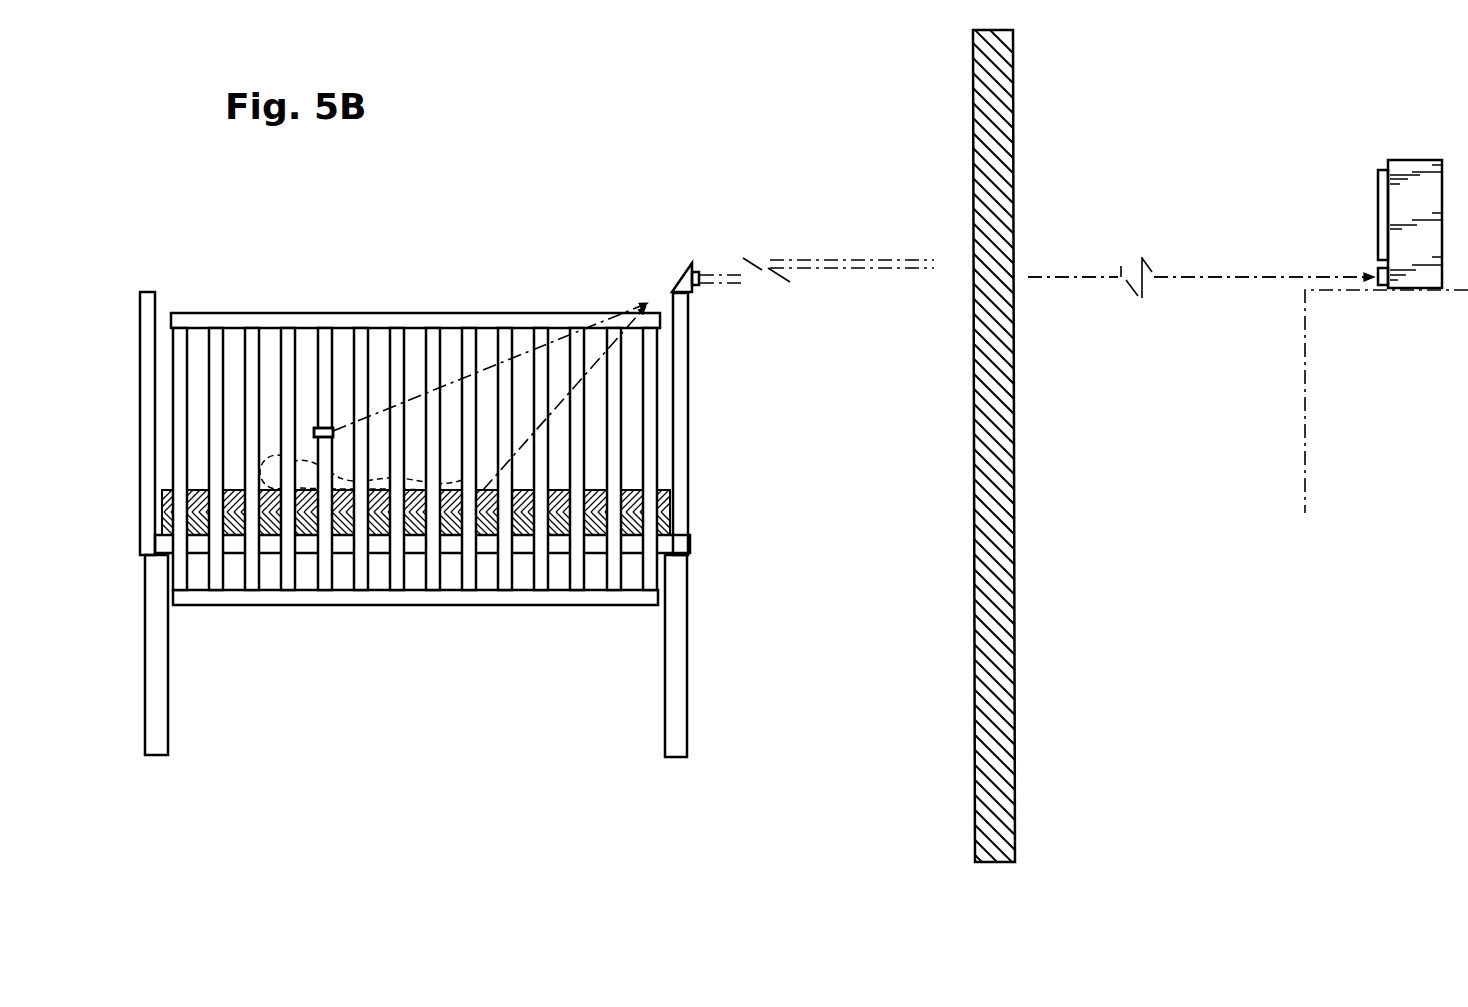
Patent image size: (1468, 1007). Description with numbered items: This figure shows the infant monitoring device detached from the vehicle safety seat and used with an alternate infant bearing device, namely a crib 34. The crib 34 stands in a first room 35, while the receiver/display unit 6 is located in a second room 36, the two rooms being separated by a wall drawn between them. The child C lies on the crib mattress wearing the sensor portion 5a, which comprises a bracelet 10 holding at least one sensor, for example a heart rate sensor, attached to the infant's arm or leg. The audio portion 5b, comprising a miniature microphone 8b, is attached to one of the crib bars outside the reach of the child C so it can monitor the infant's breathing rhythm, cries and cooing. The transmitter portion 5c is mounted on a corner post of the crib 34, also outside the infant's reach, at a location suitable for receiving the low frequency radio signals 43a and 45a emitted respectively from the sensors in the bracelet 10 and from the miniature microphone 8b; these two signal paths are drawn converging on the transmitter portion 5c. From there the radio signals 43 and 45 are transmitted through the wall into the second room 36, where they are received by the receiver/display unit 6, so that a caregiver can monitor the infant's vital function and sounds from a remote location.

The first room 35 is at (489, 185).
The second room 36 is at (1159, 183).
The crib 34 is at (430, 313).
The child C is at (272, 455).
The sensor portion 5a is at (482, 488).
The bracelet 10 is at (416, 512).
The audio portion 5b is at (313, 427).
The miniature microphone 8b is at (323, 432).
The transmitter portion 5c is at (682, 280).
The low frequency radio signal 45a is at (557, 338).
The low frequency radio signal 43a is at (593, 373).
The radio signal 45 is at (848, 260).
The radio signal 43 is at (823, 270).
The receiver/display unit 6 is at (1410, 160).